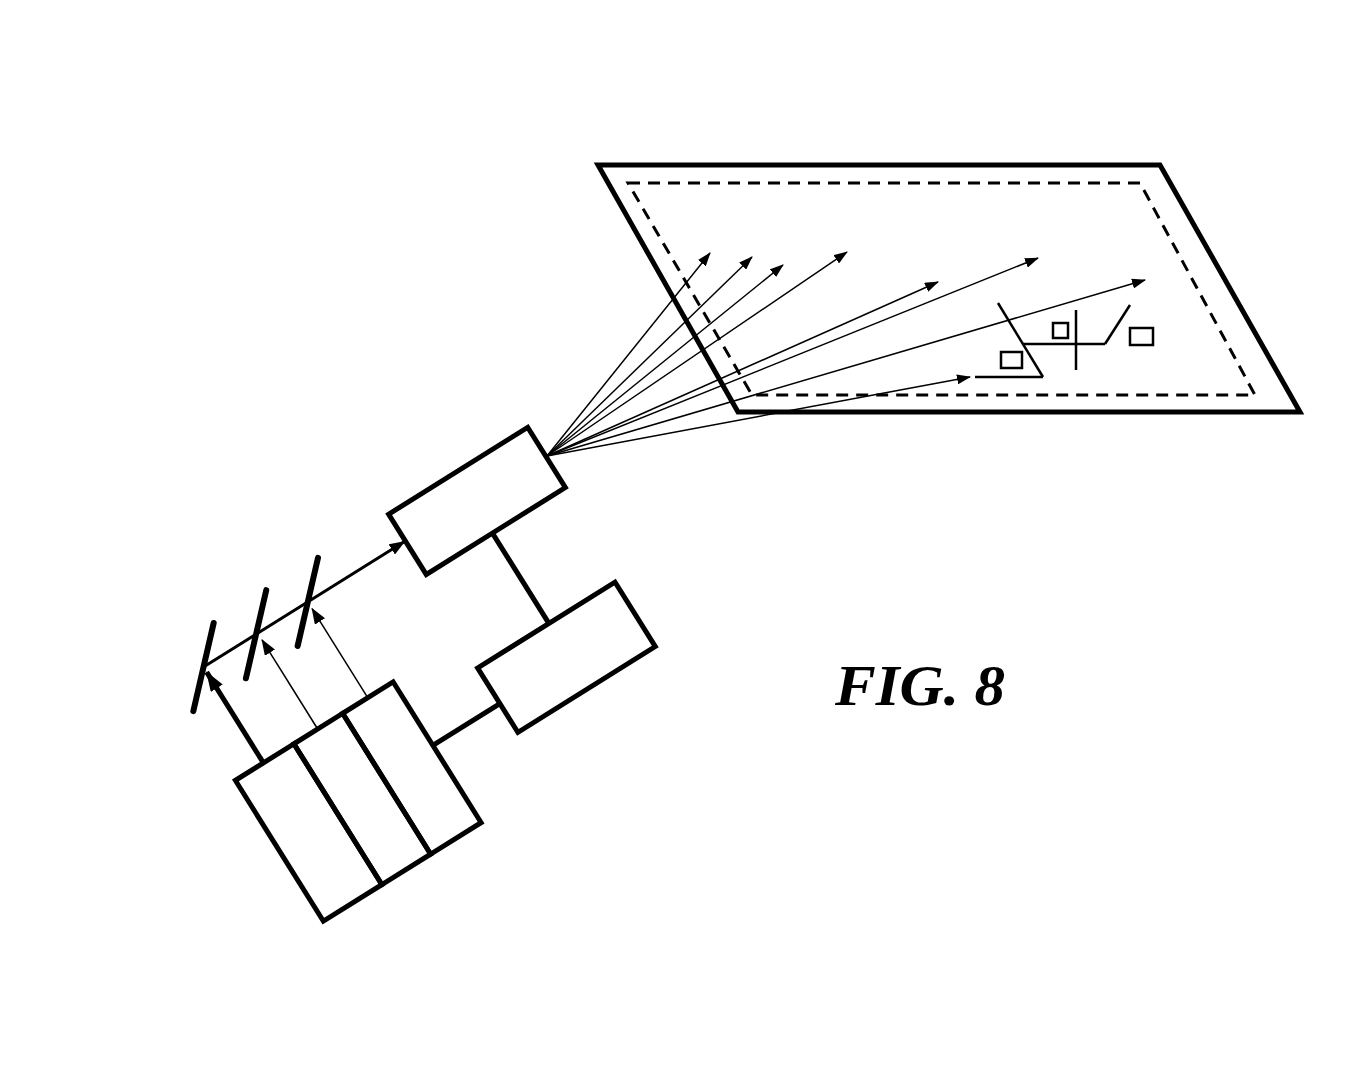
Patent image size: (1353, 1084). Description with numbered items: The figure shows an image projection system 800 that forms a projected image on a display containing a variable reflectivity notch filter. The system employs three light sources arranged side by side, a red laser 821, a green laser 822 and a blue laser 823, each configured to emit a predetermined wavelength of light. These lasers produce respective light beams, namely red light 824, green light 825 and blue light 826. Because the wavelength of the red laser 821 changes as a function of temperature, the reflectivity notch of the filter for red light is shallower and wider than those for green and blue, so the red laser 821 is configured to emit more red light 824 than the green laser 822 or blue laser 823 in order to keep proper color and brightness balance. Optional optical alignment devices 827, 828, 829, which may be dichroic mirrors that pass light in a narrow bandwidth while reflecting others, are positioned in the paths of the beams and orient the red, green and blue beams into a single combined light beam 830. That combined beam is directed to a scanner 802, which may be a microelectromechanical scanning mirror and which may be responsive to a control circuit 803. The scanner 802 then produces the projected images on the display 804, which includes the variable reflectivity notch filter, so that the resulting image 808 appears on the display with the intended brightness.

The image projection system 800 is at (282, 412).
The scanner 802 is at (490, 487).
The control circuit 803 is at (553, 655).
The display 804 is at (668, 165).
The image 808 is at (897, 225).
The red laser 821 is at (280, 813).
The green laser 822 is at (380, 840).
The blue laser 823 is at (435, 792).
The red light beam 824 is at (235, 727).
The green light beam 825 is at (297, 700).
The blue light beam 826 is at (336, 652).
The optical alignment device 827 is at (210, 632).
The optical alignment device 828 is at (265, 588).
The optical alignment device 829 is at (320, 556).
The combined light beam 830 is at (361, 575).